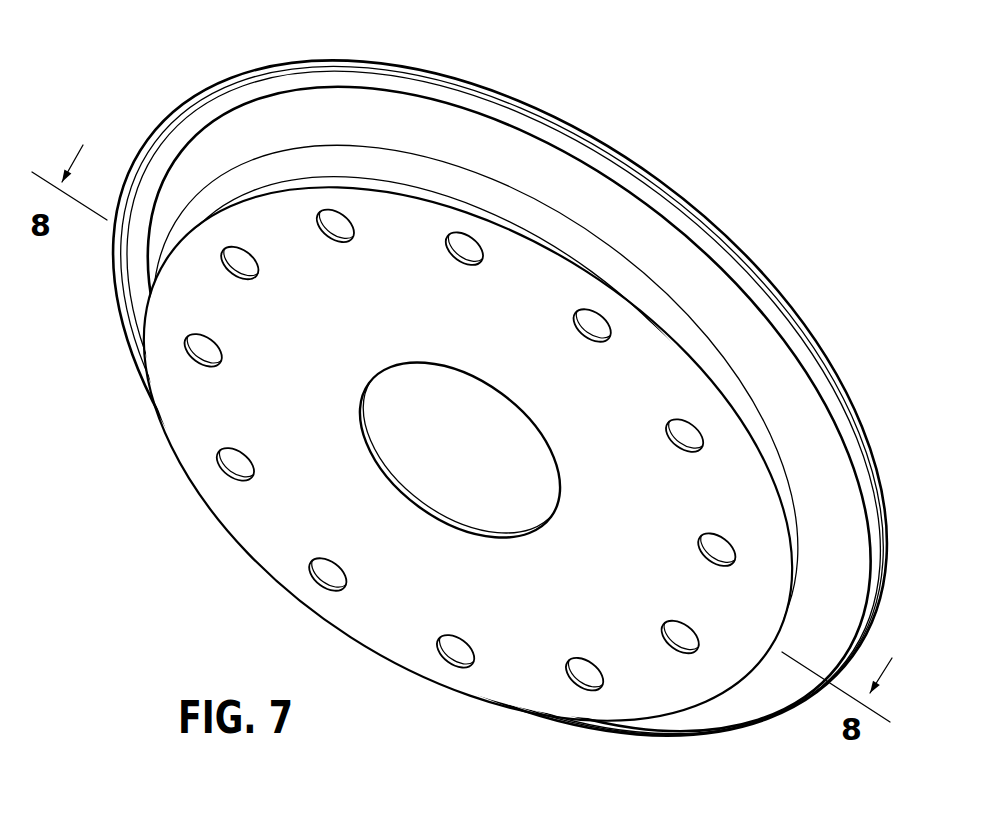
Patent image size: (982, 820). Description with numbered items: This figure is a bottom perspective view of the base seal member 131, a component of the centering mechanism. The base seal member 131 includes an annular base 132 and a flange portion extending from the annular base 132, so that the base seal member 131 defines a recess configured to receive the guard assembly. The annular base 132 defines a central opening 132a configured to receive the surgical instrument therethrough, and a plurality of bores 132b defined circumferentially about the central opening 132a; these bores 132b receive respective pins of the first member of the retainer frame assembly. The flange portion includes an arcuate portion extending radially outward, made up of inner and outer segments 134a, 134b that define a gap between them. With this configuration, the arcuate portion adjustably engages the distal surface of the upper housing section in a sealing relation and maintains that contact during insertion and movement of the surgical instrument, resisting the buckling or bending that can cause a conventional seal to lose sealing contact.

The base seal member 131 is at (491, 410).
The annular base 132 is at (467, 448).
The central opening 132a is at (480, 465).
The bores 132b is at (685, 440).
The inner segment 134a is at (455, 180).
The outer segment 134b is at (367, 84).